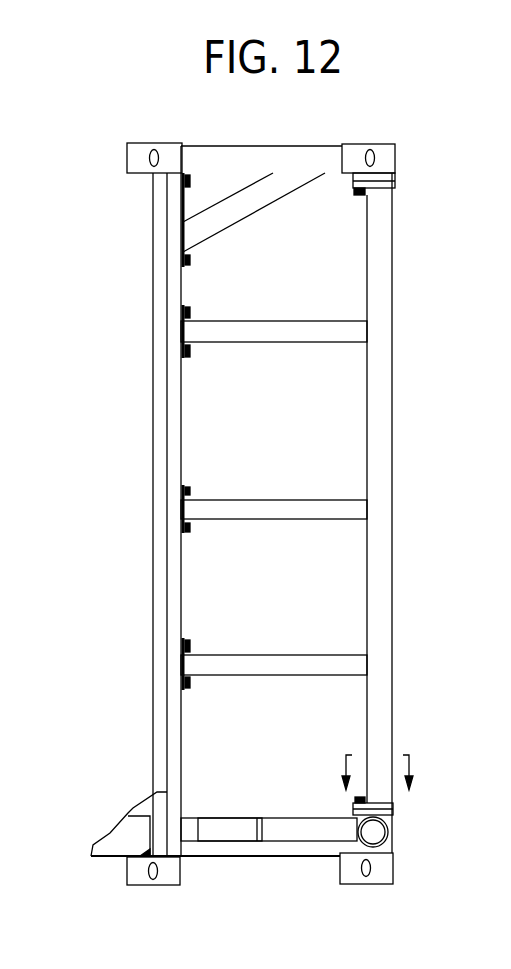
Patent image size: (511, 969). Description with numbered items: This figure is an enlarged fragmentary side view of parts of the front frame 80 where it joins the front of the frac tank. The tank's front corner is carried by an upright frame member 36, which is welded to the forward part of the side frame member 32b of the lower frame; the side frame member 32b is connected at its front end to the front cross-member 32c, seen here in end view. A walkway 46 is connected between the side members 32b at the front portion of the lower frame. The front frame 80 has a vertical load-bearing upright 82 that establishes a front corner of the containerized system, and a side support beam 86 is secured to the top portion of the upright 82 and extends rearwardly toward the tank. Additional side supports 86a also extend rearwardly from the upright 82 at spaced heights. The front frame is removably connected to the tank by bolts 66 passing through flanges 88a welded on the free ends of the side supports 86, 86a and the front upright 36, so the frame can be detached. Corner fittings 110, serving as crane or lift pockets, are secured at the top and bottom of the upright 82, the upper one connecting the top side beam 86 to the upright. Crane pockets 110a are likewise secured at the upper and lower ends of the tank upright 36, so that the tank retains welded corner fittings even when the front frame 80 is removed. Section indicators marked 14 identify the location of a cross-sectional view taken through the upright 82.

The front frame 80 is at (371, 134).
The side support beam 86 is at (243, 146).
The additional side support 86a is at (315, 328).
The flange 88a is at (183, 223).
The bolt 66 is at (188, 182).
The corner fitting 110 is at (395, 150).
The crane pocket 110a is at (127, 155).
The upright 82 is at (392, 368).
The upright frame member 36 is at (153, 485).
The section line 14 is at (381, 753).
The walkway 46 is at (205, 818).
The side frame member 32b is at (275, 818).
The front cross-member 32c is at (390, 832).